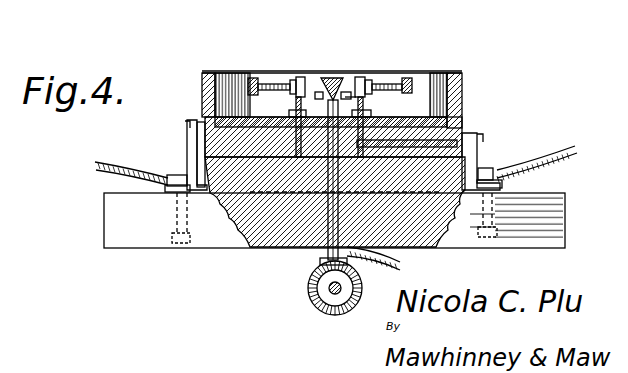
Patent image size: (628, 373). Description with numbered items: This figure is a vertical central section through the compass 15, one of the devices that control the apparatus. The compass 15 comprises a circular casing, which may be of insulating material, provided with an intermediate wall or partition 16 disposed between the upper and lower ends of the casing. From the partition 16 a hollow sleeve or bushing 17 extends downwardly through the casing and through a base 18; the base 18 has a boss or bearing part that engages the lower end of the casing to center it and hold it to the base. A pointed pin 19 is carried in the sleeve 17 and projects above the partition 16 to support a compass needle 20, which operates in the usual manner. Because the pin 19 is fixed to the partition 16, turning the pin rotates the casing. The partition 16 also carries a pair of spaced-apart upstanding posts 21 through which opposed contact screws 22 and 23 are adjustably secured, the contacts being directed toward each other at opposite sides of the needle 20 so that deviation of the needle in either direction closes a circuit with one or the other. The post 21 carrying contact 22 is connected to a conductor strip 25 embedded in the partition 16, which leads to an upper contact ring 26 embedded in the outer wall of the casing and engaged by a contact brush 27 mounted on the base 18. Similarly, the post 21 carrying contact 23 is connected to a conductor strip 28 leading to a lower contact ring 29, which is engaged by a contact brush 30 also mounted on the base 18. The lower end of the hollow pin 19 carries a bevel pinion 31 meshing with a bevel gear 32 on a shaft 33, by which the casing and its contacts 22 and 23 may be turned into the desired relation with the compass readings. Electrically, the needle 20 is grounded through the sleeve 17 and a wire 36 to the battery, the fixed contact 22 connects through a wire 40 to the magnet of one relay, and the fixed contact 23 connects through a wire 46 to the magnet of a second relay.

The compass 15 is at (462, 88).
The partition 16 is at (447, 72).
The sleeve 17 is at (285, 250).
The base 18 is at (553, 229).
The pointed pin 19 is at (363, 98).
The compass needle 20 is at (334, 78).
The upstanding posts 21 is at (300, 77).
The contact screw 22 is at (270, 80).
The contact screw 23 is at (385, 78).
The conductor strip 25 is at (253, 128).
The upper contact ring 26 is at (462, 121).
The contact brush 27 is at (187, 129).
The conductor strip 28 is at (415, 118).
The lower contact ring 29 is at (200, 151).
The contact brush 30 is at (473, 162).
The bevel pinion 31 is at (325, 262).
The bevel gear 32 is at (318, 300).
The shaft 33 is at (334, 294).
The wire 36 is at (405, 263).
The wire 40 is at (98, 172).
The wire 46 is at (575, 146).